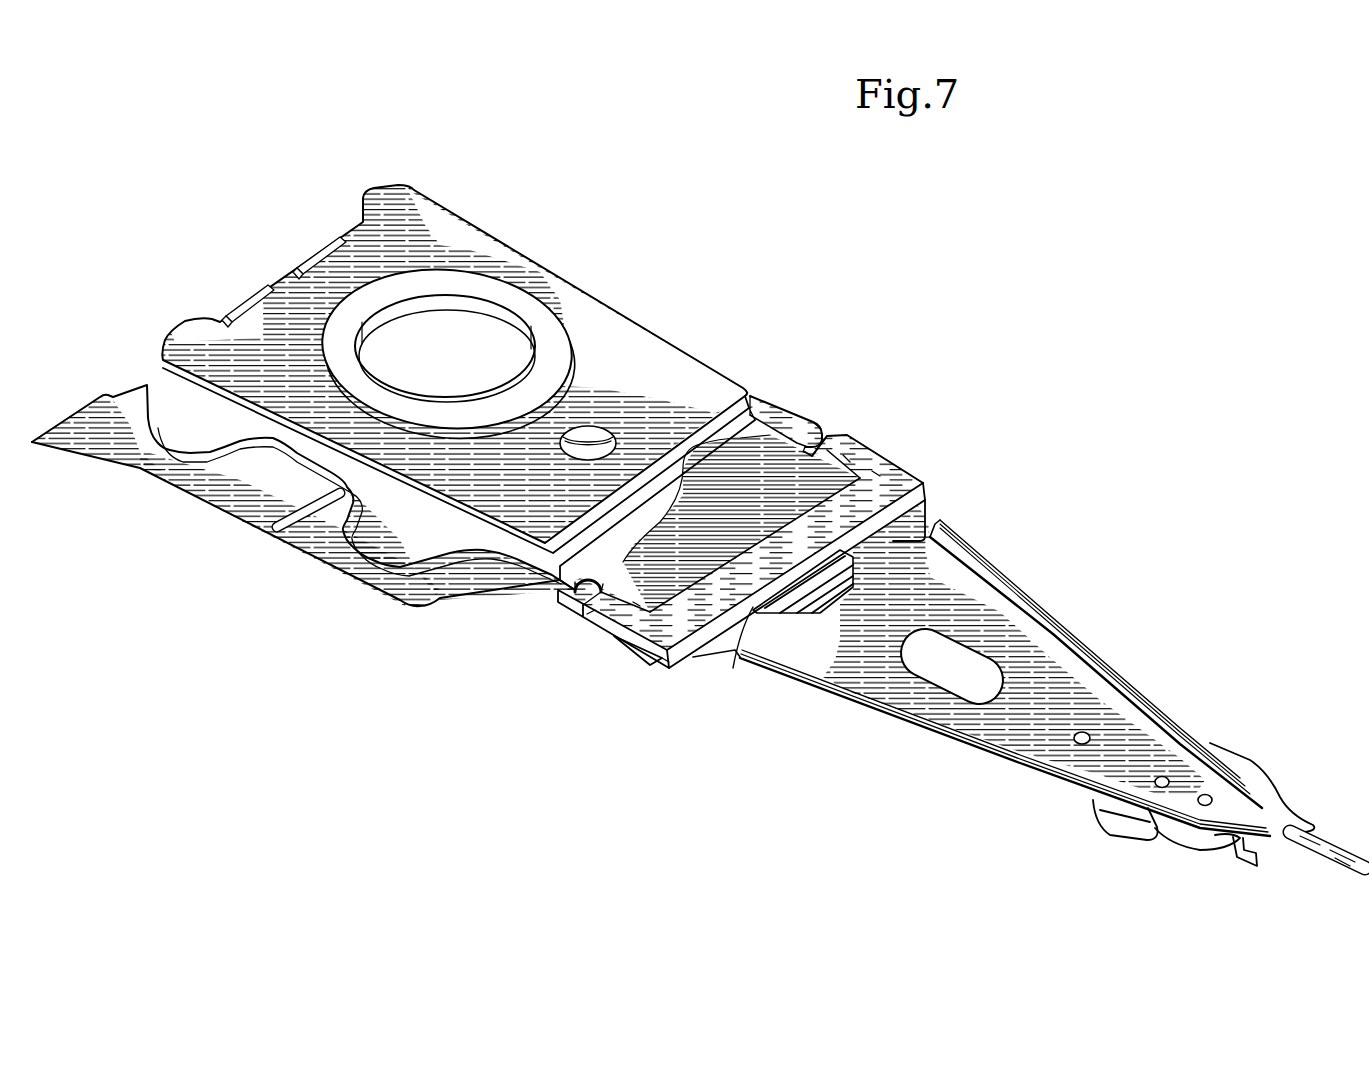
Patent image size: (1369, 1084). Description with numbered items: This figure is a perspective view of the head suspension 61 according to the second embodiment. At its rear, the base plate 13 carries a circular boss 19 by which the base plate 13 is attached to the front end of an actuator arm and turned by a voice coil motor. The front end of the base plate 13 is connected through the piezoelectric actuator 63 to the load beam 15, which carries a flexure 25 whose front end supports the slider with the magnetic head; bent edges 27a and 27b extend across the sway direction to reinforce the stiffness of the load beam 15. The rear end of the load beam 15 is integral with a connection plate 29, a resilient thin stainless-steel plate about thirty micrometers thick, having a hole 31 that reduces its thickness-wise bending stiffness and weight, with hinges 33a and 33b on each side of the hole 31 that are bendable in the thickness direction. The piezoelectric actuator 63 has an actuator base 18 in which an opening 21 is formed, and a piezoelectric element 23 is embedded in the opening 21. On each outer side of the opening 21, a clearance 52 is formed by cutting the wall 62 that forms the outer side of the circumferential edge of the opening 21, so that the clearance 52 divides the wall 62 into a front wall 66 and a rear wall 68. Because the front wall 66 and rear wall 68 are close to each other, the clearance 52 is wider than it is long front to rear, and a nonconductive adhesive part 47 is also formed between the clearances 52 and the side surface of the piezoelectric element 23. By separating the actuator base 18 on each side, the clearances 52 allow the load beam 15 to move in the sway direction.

The head suspension 61 is at (1137, 202).
The base plate 13 is at (548, 284).
The boss 19 is at (465, 302).
The piezoelectric actuator 63 is at (978, 332).
The actuator base 18 is at (925, 497).
The connection plate 29 is at (925, 522).
The opening 21 is at (750, 392).
The piezoelectric element 23 is at (767, 447).
The rear wall 68 is at (810, 417).
The wall 62 is at (822, 446).
The clearance 52 is at (840, 447).
The front wall 66 is at (848, 458).
The nonconductive adhesive part 47 is at (872, 471).
The hole 31 is at (745, 632).
The hinge 33a is at (942, 520).
The hinge 33b is at (697, 660).
The load beam 15 is at (1052, 679).
The bent edge 27a is at (1020, 586).
The bent edge 27b is at (927, 733).
The flexure 25 is at (1152, 843).